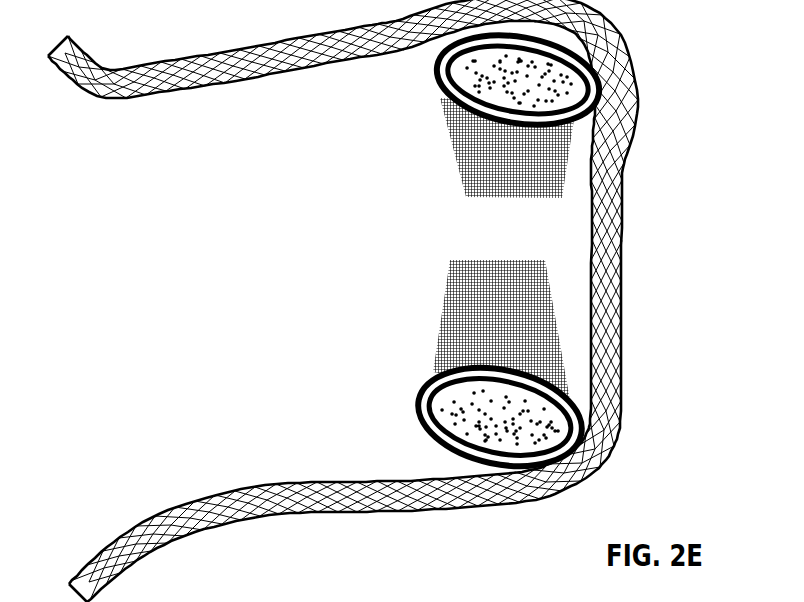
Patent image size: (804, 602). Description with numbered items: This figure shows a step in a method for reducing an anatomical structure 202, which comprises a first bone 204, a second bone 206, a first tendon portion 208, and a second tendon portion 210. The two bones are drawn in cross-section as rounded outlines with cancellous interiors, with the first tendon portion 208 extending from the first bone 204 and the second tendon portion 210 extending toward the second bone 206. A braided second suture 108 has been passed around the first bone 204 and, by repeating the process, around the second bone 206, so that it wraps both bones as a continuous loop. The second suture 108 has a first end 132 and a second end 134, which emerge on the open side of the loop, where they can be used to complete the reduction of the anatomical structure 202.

The second suture 108 is at (713, 258).
The second end 134 is at (87, 57).
The first end 132 is at (130, 533).
The anatomical structure 202 is at (258, 253).
The first bone 204 is at (442, 90).
The second bone 206 is at (415, 408).
The first tendon portion 208 is at (460, 191).
The second tendon portion 210 is at (450, 289).